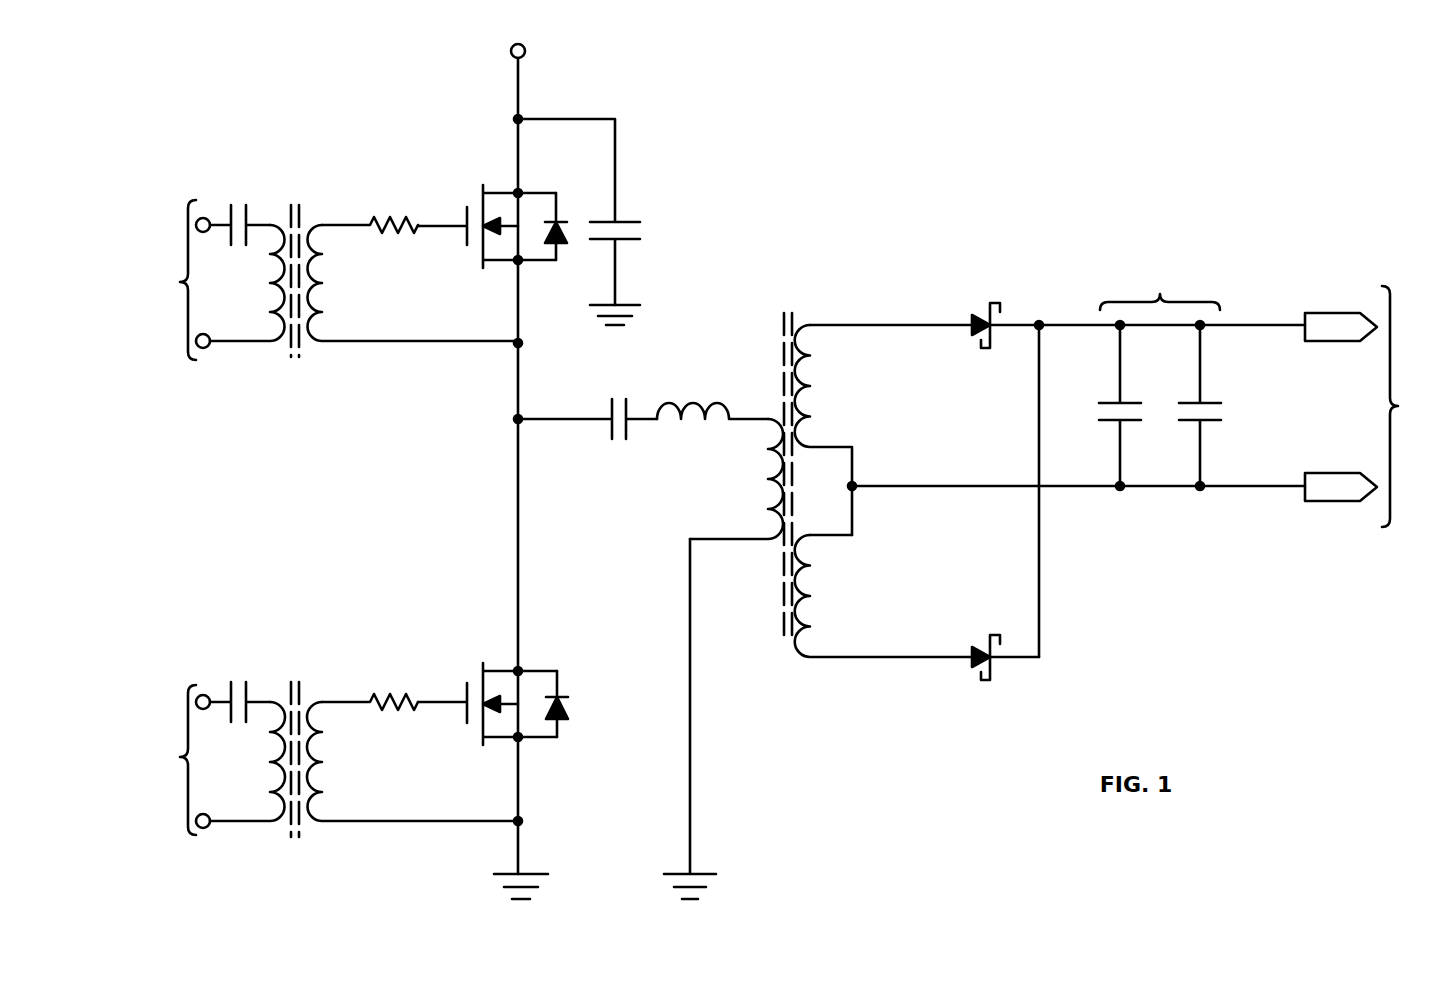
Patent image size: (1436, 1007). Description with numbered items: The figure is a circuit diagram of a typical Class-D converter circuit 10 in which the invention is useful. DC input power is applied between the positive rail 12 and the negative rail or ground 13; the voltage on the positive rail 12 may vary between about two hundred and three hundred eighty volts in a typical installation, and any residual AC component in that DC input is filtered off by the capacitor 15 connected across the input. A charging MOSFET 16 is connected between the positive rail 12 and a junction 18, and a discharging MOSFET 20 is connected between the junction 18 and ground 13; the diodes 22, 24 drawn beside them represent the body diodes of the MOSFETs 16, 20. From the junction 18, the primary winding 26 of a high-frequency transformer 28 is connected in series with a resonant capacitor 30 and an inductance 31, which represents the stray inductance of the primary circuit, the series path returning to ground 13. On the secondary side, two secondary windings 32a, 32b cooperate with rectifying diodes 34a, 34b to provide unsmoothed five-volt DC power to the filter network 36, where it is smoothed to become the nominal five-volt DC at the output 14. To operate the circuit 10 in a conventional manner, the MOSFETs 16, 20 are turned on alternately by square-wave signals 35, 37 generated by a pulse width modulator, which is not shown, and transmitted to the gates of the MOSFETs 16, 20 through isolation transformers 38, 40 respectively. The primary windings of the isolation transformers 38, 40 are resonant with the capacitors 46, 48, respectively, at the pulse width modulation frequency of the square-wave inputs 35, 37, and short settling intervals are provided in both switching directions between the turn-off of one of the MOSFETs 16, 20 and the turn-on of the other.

The Class-D converter circuit 10 is at (929, 178).
The positive rail 12 is at (523, 46).
The ground 13 is at (633, 317).
The output 14 is at (1368, 406).
The capacitor 15 is at (625, 220).
The charging MOSFET 16 is at (495, 202).
The junction 18 is at (516, 346).
The discharging MOSFET 20 is at (499, 680).
The diode 22 is at (566, 241).
The diode 24 is at (568, 708).
The primary winding 26 is at (758, 470).
The high-frequency transformer 28 is at (791, 295).
The resonant capacitor 30 is at (606, 411).
The inductance 31 is at (672, 402).
The secondary winding 32a is at (820, 372).
The secondary winding 32b is at (820, 583).
The rectifying diode 34a is at (975, 317).
The rectifying diode 34b is at (983, 663).
The square-wave signal 35 is at (175, 280).
The filter network 36 is at (1160, 375).
The square-wave signal 37 is at (175, 760).
The isolation transformer 38 is at (306, 374).
The isolation transformer 40 is at (305, 664).
The capacitor 46 is at (250, 220).
The capacitor 48 is at (250, 690).